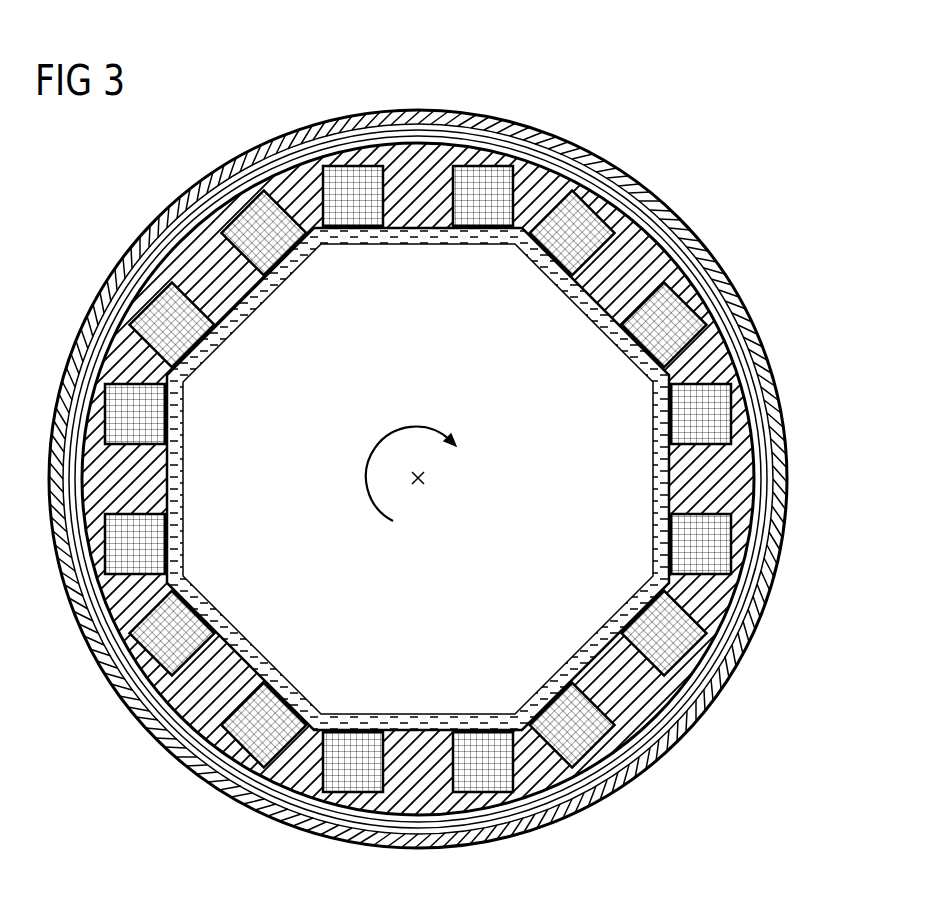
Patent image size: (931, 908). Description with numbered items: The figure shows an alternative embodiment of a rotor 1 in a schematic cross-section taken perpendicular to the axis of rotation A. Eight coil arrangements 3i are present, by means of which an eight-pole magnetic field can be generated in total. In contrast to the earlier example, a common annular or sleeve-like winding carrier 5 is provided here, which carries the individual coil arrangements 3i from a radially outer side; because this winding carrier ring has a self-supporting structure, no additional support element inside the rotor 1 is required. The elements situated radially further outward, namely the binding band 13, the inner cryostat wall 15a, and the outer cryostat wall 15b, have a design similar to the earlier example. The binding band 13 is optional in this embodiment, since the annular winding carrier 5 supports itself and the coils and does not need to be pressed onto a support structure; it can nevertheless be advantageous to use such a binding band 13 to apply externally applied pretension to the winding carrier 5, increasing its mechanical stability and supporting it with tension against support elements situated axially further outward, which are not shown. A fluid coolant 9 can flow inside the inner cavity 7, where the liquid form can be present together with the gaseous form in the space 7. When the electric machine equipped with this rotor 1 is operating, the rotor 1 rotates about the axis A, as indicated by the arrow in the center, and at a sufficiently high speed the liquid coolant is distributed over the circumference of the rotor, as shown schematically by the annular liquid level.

The rotor 1 is at (779, 193).
The winding carrier 5 is at (645, 263).
The coil arrangements 3i is at (682, 312).
The fluid coolant 9 is at (223, 327).
The inner cavity 7 is at (530, 379).
The binding band 13 is at (748, 567).
The inner cryostat wall 15a is at (688, 727).
The outer cryostat wall 15b is at (735, 668).
The axis of rotation A is at (424, 478).